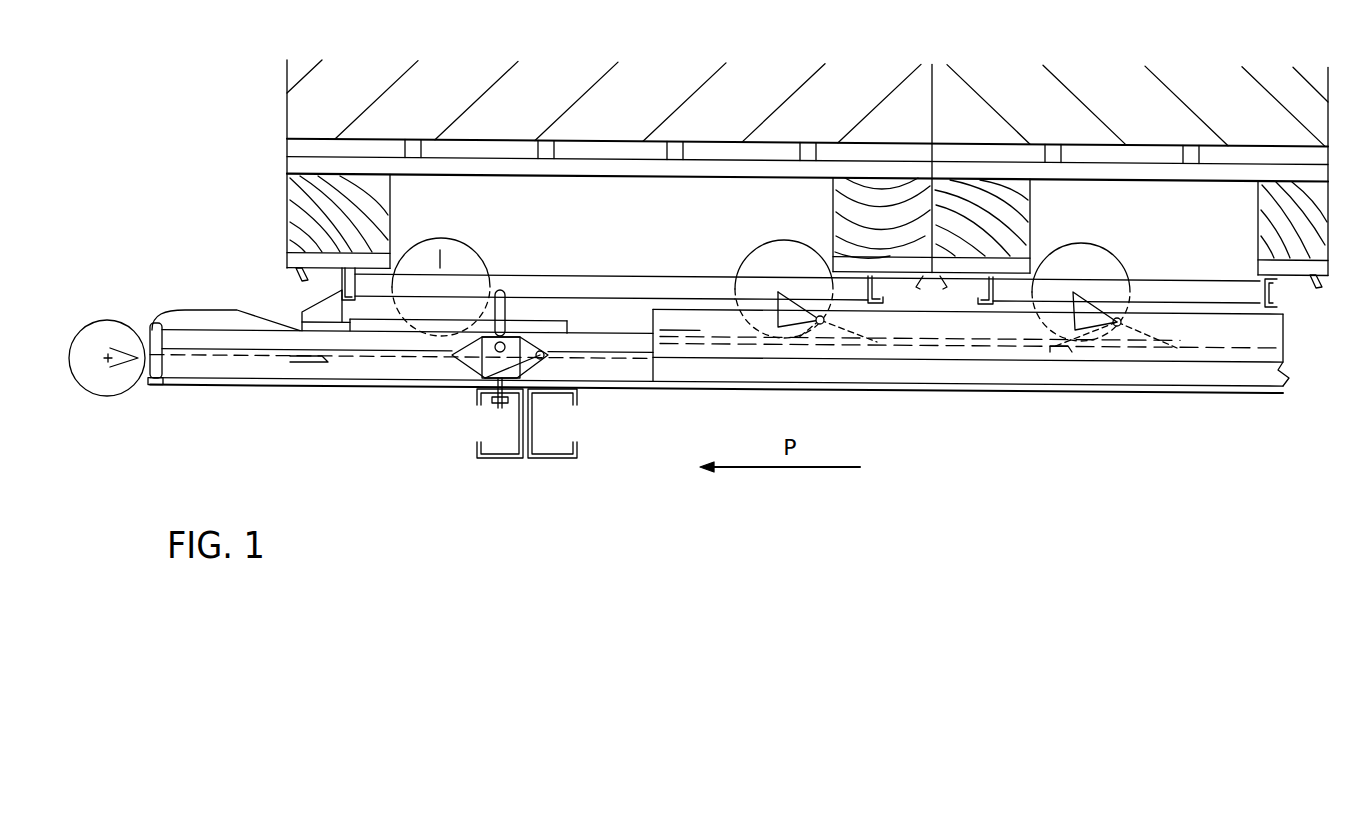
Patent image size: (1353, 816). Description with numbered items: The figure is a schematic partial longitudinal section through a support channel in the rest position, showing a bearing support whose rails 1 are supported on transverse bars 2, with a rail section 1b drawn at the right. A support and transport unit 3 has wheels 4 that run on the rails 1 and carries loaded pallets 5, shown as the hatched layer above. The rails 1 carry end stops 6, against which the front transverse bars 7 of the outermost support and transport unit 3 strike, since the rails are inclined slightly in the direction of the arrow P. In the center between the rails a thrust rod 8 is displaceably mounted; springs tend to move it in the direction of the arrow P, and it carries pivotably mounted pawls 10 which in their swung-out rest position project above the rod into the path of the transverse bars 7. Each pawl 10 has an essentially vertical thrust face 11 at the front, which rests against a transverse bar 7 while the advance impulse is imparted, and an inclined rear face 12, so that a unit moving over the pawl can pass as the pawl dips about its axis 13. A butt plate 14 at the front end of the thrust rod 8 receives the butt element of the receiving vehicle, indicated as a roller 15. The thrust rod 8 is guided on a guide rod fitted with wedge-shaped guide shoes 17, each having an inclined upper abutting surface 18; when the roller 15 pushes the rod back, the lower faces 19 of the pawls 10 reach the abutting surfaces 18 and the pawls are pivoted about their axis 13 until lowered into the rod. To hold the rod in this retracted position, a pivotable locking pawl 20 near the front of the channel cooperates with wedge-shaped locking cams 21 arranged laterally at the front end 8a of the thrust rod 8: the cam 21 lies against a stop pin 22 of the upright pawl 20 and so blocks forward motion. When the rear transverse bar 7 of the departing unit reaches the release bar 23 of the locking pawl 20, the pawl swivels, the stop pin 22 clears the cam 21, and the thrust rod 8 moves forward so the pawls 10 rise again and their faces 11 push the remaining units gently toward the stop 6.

The rails 1 is at (608, 345).
The beam section 1b is at (707, 375).
The transverse bars 2 is at (510, 458).
The support and transport unit 3 is at (640, 268).
The wheels 4 is at (1123, 250).
The loaded pallets 5 is at (250, 150).
The end stops 6 is at (317, 305).
The transverse bars 7 is at (345, 270).
The thrust rod 8 is at (742, 337).
The front end of the thrust rod 8a is at (620, 368).
The pawls 10 is at (792, 293).
The thrust face 11 is at (753, 280).
The rear face 12 is at (798, 302).
The axis 13 is at (819, 326).
The butt plate 14 is at (152, 384).
The roller 15 is at (107, 327).
The guide shoes 17 is at (1093, 353).
The abutting surface 18 is at (1055, 350).
The lower faces 19 is at (851, 347).
The locking pawl 20 is at (518, 318).
The locking cams 21 is at (306, 364).
The stop pin 22 is at (497, 385).
The release bar 23 is at (504, 288).